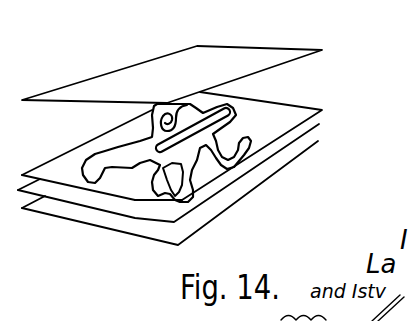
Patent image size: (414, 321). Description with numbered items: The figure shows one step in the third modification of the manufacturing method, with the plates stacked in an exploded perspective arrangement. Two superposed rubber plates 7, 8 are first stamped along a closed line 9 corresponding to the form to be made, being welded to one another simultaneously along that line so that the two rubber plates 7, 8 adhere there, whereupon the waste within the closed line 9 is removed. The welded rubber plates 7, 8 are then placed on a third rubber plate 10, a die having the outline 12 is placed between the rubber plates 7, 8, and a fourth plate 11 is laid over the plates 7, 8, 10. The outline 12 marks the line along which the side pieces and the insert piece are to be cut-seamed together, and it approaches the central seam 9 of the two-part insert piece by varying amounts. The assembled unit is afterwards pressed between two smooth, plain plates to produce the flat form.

The rubber plate 7 is at (299, 110).
The rubber plate 8 is at (317, 125).
The closed line 9 is at (197, 143).
The third rubber plate 10 is at (302, 148).
The fourth plate 11 is at (264, 52).
The outline of the die 12 is at (133, 165).